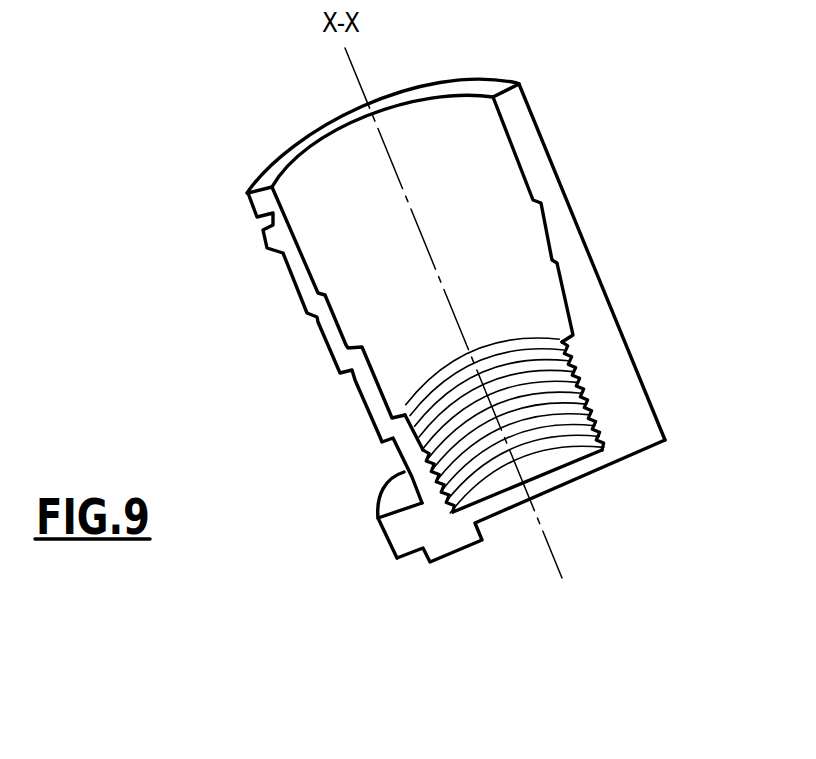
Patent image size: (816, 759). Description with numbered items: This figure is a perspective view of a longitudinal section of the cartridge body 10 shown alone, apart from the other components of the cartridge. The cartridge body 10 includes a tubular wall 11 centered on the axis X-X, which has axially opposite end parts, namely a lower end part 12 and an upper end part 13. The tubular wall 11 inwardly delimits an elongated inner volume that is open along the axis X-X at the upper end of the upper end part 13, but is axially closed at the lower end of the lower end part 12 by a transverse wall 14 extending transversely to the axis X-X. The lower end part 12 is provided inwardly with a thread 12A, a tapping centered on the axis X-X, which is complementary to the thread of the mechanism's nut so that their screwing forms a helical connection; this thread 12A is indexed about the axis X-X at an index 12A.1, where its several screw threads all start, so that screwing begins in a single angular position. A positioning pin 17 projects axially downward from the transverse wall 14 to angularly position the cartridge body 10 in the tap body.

The cartridge body 10 is at (295, 283).
The tubular wall 11 is at (683, 58).
The lower end part 12 is at (608, 382).
The thread 12A is at (527, 390).
The index 12A.1 is at (431, 400).
The upper end part 13 is at (533, 150).
The transverse wall 14 is at (512, 497).
The positioning pin 17 is at (439, 546).